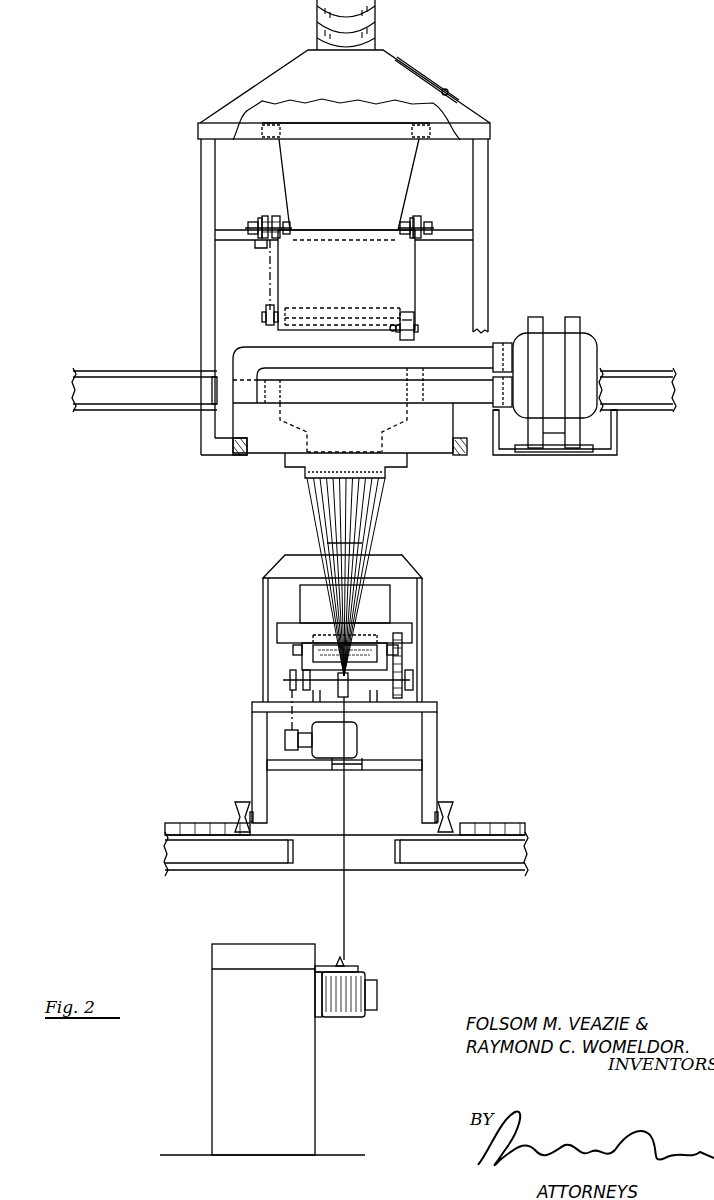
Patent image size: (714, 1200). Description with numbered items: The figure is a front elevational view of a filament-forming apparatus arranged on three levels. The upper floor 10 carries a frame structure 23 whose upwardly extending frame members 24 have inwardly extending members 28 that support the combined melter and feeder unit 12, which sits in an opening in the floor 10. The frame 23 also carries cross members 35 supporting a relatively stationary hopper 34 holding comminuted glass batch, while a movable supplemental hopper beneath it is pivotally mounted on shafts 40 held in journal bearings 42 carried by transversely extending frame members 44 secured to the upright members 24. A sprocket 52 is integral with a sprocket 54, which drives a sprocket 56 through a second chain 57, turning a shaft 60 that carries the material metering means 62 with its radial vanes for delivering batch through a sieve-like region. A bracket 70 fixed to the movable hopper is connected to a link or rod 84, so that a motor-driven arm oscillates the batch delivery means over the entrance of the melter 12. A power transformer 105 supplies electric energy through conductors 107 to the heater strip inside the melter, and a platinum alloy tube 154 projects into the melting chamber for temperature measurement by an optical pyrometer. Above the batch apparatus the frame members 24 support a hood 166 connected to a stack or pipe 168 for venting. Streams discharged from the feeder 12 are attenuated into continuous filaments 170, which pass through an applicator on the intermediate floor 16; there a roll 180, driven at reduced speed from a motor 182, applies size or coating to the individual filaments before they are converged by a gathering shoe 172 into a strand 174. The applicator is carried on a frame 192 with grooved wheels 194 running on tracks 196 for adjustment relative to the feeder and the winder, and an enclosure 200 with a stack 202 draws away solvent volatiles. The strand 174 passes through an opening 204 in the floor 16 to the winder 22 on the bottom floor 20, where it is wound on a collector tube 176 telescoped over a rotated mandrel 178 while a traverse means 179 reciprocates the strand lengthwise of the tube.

The stack or pipe 168 is at (317, 35).
The cover or hood 166 is at (272, 80).
The cross members 35 is at (263, 125).
The frame structure 23 is at (196, 134).
The upwardly extending frame members 24 is at (200, 160).
The hopper 34 is at (400, 150).
The journal bearings 42 is at (252, 222).
The sprocket 54 is at (268, 216).
The shafts 40 is at (248, 225).
The sprocket 52 is at (262, 242).
The second chain 57 is at (268, 268).
The shaft 60 is at (265, 312).
The sprocket 56 is at (265, 322).
The material metering means 62 is at (310, 300).
The bracket 70 is at (408, 316).
The link or rod 84 is at (391, 331).
The transversely extending frame members 44 is at (428, 242).
The conductors 107 is at (418, 350).
The power transformer 105 is at (555, 318).
The upper level or floor 10 is at (624, 372).
The platinum alloy tube 154 is at (336, 412).
The inwardly extending members 28 is at (242, 457).
The combined melter and feeder unit 12 is at (280, 468).
The continuous filaments or fibers 170 is at (350, 494).
The stack 202 is at (343, 543).
The enclosure 200 is at (262, 602).
The roll 180 is at (365, 648).
The gathering means or shoe 172 is at (350, 690).
The motor 182 is at (358, 742).
The frame 192 is at (440, 722).
The strand 174 is at (347, 792).
The grooved wheels 194 is at (238, 805).
The tracks 196 is at (238, 833).
The intermediate floor or level 16 is at (512, 832).
The opening 204 is at (336, 845).
The winding apparatus or winder 22 is at (210, 944).
The traverse means 179 is at (345, 962).
The collector tube or sleeve 176 is at (362, 972).
The mandrel 178 is at (378, 996).
The bottom floor or level 20 is at (188, 1155).